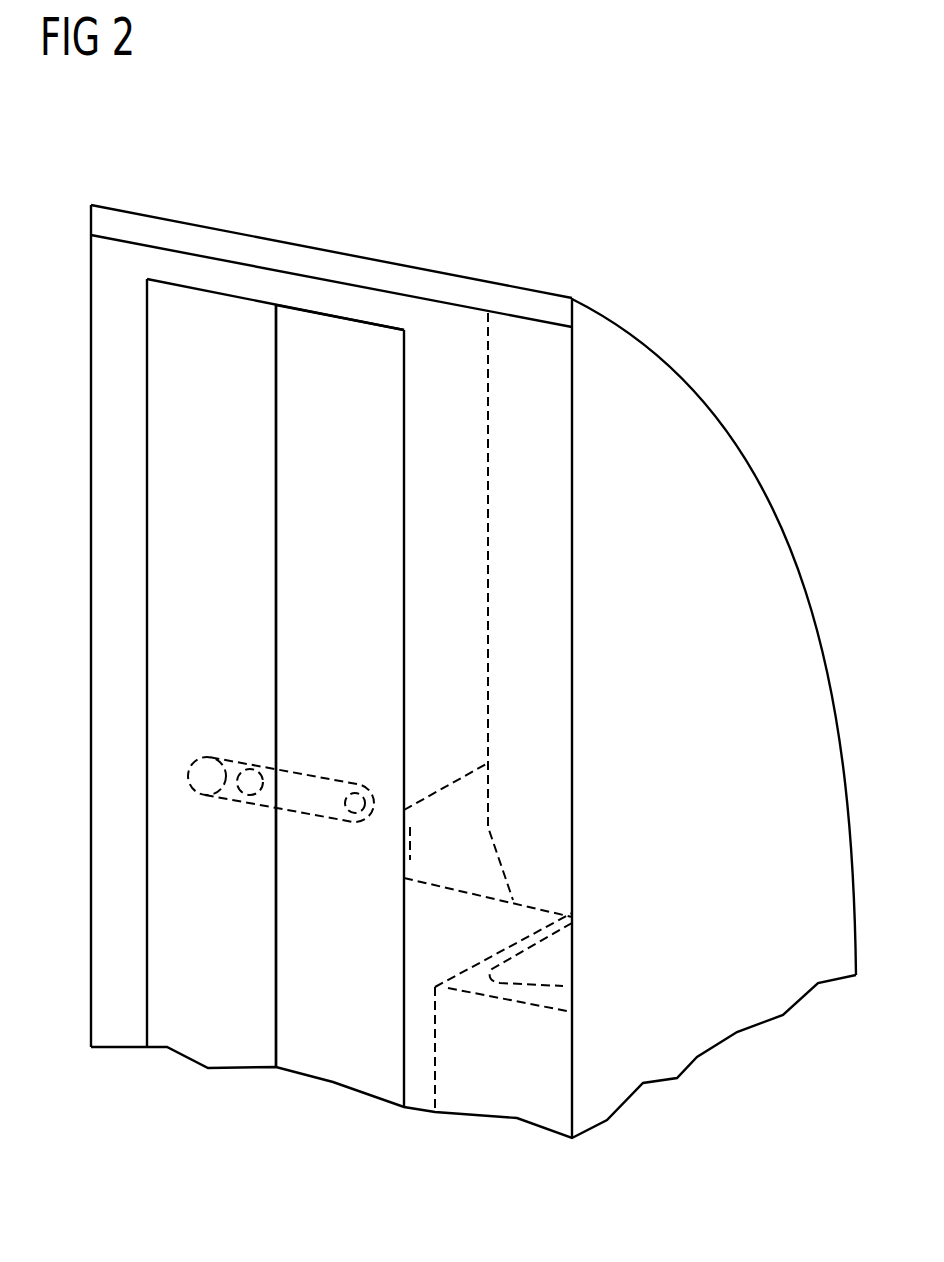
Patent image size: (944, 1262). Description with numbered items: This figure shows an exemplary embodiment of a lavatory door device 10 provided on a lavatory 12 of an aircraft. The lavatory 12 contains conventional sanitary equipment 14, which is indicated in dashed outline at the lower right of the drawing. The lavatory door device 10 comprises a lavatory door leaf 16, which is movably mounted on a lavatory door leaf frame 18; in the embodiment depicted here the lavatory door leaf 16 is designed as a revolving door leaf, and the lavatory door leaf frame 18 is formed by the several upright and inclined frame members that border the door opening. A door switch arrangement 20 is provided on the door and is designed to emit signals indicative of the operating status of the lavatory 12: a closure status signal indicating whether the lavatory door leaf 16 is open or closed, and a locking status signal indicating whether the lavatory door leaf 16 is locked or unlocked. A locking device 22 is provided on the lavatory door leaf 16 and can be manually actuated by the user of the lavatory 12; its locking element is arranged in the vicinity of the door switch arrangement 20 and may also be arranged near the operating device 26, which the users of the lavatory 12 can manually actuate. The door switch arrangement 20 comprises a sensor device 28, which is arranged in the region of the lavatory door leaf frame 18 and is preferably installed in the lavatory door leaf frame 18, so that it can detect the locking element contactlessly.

The lavatory door device 10 is at (166, 196).
The lavatory 12 is at (458, 352).
The sanitary equipment 14 is at (518, 968).
The lavatory door leaf 16 is at (326, 345).
The lavatory door leaf frame 18 is at (243, 298).
The door switch arrangement 20 is at (383, 786).
The locking device 22 is at (323, 826).
The operating device 26 is at (243, 746).
The sensor device 28 is at (415, 842).